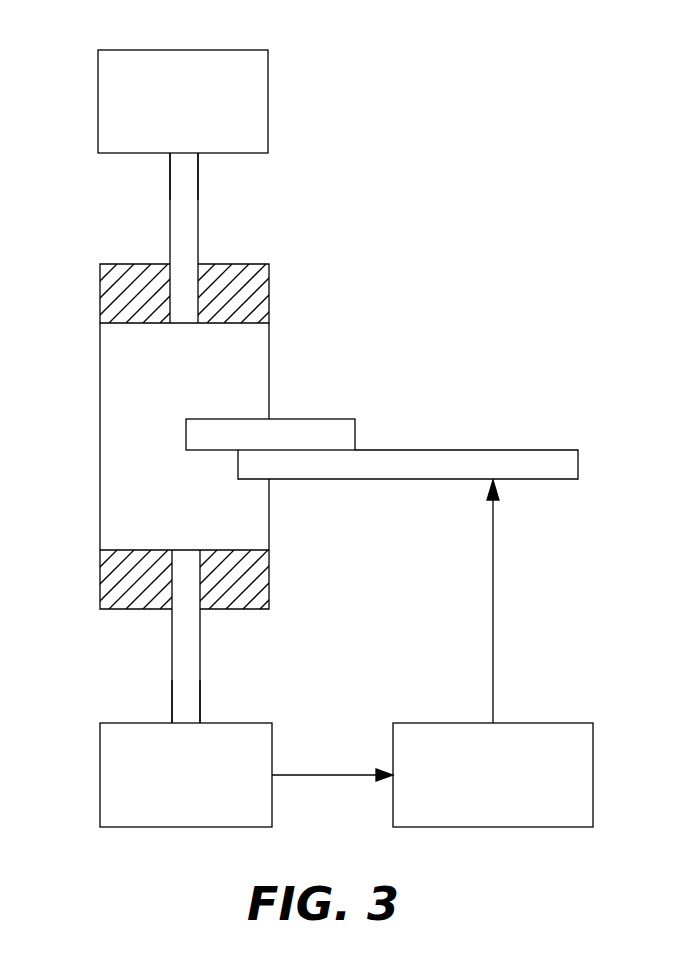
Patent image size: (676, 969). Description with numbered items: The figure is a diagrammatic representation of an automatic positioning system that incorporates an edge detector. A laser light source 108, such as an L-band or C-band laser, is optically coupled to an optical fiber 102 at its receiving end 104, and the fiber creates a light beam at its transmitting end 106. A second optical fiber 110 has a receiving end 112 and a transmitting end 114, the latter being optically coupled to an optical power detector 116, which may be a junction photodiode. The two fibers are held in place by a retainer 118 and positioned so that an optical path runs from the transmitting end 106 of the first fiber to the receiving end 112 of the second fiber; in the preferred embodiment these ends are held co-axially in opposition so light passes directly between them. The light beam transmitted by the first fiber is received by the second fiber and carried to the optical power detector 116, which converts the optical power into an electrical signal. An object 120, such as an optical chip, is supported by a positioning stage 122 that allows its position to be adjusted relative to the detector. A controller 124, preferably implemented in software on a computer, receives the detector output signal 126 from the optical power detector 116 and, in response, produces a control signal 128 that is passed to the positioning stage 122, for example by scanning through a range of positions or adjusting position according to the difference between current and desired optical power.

The optical fiber 102 is at (200, 218).
The receiving end 104 is at (183, 155).
The transmitting end 106 is at (185, 323).
The laser light source 108 is at (98, 117).
The second optical fiber 110 is at (202, 678).
The receiving end 112 is at (186, 550).
The transmitting end 114 is at (187, 722).
The optical power detector 116 is at (100, 777).
The retainer 118 is at (270, 366).
The object 120 is at (332, 419).
The positioning stage 122 is at (438, 450).
The controller 124 is at (595, 775).
The detector output signal 126 is at (300, 773).
The control signal 128 is at (493, 610).